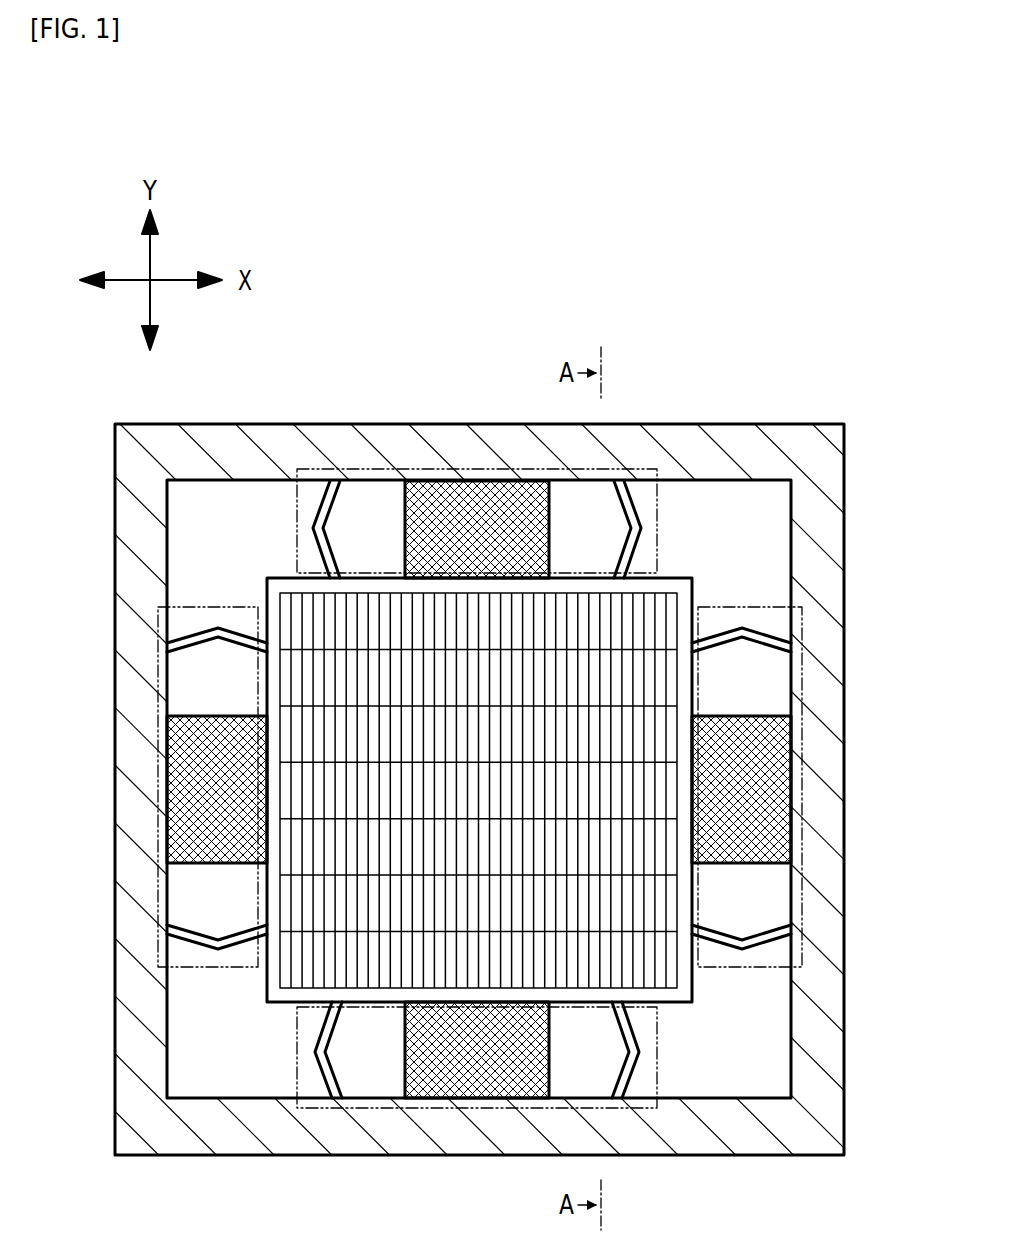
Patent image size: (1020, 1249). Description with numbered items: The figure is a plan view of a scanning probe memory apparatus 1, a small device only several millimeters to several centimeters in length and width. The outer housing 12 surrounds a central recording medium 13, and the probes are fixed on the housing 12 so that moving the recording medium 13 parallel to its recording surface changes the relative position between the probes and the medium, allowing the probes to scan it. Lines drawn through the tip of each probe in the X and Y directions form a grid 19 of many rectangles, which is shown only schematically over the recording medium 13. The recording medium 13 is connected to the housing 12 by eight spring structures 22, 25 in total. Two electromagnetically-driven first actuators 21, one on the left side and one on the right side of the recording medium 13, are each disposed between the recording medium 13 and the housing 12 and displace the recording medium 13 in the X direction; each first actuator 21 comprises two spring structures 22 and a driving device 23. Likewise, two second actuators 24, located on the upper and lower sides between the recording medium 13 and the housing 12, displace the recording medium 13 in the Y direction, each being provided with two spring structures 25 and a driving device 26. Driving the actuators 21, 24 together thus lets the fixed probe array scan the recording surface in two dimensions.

The scanning probe memory apparatus 1 is at (754, 375).
The housing 12 is at (397, 446).
The recording medium 13 is at (694, 1004).
The grid 19 is at (696, 576).
The first actuator 21 is at (216, 604).
The spring structure 22 is at (196, 640).
The driving device 23 is at (180, 797).
The second actuator 24 is at (293, 512).
The spring structure 25 is at (326, 524).
The driving device 26 is at (484, 497).